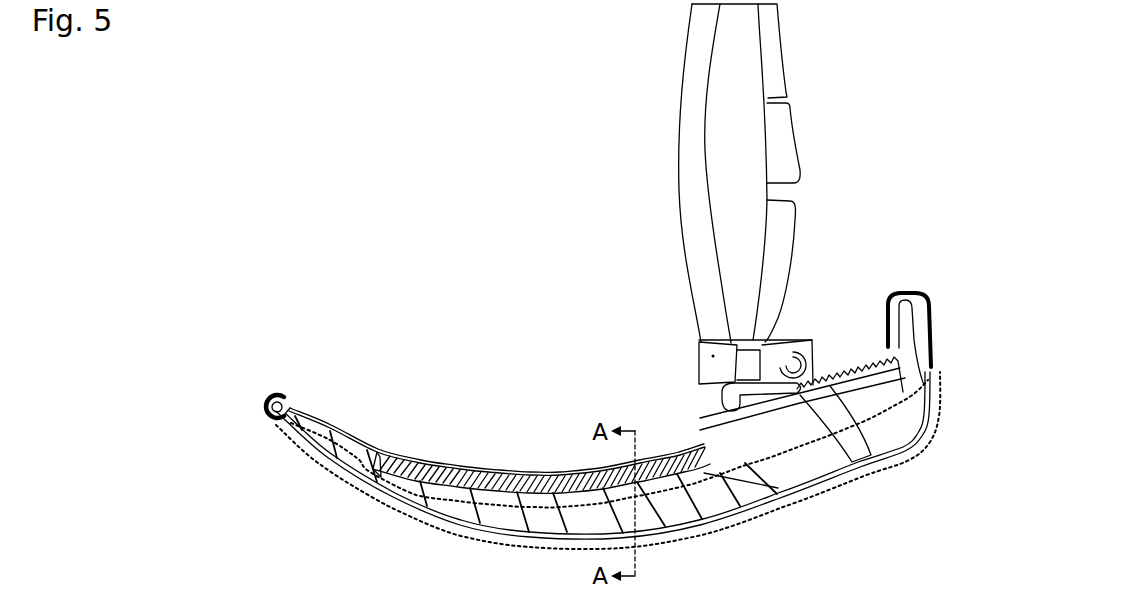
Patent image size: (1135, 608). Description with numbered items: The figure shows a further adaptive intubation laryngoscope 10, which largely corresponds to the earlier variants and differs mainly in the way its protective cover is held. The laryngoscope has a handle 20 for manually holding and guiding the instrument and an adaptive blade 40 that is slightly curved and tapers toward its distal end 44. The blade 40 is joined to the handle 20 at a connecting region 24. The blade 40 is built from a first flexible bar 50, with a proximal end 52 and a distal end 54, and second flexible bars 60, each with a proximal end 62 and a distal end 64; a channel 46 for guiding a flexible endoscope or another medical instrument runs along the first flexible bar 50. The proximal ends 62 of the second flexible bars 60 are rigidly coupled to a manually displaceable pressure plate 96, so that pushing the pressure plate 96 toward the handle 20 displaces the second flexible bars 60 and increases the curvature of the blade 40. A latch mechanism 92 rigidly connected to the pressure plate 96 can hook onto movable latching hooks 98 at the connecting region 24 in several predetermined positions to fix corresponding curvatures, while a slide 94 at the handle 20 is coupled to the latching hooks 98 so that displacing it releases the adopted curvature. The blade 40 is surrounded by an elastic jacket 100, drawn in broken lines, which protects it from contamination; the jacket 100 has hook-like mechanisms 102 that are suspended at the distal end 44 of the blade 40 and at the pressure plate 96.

The intubation laryngoscope 10 is at (318, 60).
The handle 20 is at (770, 72).
The slide for unlocking 94 is at (782, 153).
The connecting region 24 is at (748, 356).
The movable latching hooks 98 is at (772, 396).
The proximal end of the first flexible bar 52 is at (690, 447).
The latch mechanism 92 is at (863, 368).
The proximal end of the second flexible bar 62 is at (880, 453).
The pressure plate 96 is at (928, 325).
The hook-like mechanism 102 is at (907, 333).
The distal end of the adaptive blade 44 is at (272, 399).
The distal end of the first flexible bar 54 is at (291, 414).
The distal end of the second flexible bar 64 is at (275, 428).
The first flexible bar 50 is at (430, 462).
The adaptive blade 40 is at (577, 470).
The channel 46 is at (517, 480).
The second flexible bar 60 is at (409, 516).
The elastic jacket 100 is at (733, 523).